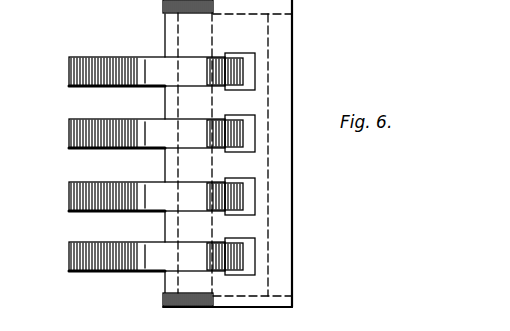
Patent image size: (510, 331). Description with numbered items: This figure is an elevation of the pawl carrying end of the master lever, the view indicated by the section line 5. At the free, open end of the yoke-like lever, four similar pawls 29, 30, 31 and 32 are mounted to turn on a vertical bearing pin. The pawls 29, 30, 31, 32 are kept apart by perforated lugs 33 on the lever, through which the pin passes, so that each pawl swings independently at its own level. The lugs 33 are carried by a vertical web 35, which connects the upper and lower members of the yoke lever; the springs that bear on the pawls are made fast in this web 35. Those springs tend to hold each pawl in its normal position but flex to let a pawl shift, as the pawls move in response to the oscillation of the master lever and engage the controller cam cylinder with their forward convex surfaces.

The pawl 29 is at (96, 58).
The pawl 30 is at (68, 128).
The pawl 31 is at (68, 193).
The pawl 32 is at (68, 253).
The perforated lugs 33 is at (165, 168).
The vertical web 35 is at (293, 34).
The section line 5- 5 is at (48, 48).